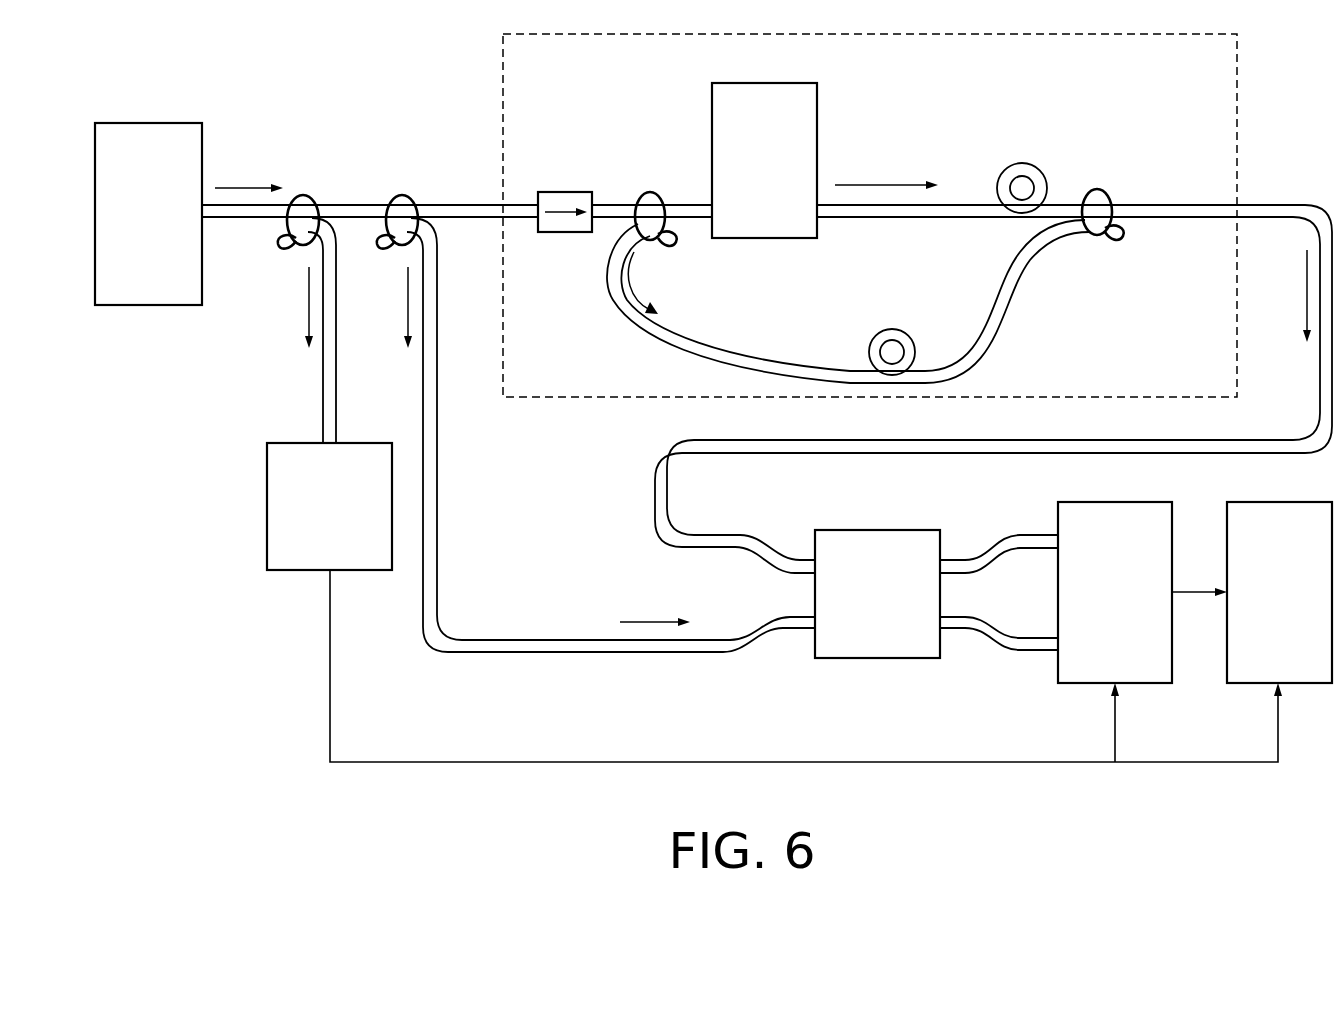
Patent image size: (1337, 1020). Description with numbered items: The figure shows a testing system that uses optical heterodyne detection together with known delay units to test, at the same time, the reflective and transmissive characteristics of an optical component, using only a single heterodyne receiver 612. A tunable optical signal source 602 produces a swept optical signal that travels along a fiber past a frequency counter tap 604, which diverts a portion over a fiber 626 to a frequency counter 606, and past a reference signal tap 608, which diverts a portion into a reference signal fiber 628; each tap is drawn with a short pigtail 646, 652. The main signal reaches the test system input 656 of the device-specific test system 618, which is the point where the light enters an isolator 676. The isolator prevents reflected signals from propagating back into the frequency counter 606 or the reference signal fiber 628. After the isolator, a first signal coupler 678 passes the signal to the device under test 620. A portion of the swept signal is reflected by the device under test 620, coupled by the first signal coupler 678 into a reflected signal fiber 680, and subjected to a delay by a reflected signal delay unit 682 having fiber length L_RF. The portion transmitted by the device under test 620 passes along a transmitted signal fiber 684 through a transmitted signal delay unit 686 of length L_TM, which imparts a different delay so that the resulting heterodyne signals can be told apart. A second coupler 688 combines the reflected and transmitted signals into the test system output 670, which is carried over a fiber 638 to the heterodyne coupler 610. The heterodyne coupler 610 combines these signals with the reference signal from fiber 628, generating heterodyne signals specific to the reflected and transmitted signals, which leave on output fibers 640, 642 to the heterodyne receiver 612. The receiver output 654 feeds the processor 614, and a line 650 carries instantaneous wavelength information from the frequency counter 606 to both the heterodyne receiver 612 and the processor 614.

The tunable optical signal source 602 is at (129, 290).
The frequency counter tap 604 is at (301, 162).
The frequency counter 606 is at (311, 552).
The reference signal tap 608 is at (401, 162).
The heterodyne coupler 610 is at (858, 642).
The heterodyne receiver 612 is at (1096, 644).
The processor 614 is at (1261, 644).
The device-specific test system 618 is at (1237, 99).
The device under test 620 is at (744, 219).
The optical fiber to frequency counter 626 is at (338, 345).
The reference signal fiber 628 is at (515, 638).
The optical fiber to heterodyne coupler 638 is at (657, 488).
The heterodyne coupler output fiber 640 is at (1017, 535).
The heterodyne coupler output fiber 642 is at (1017, 655).
The coupler fiber pigtail 646 is at (298, 250).
The instantaneous wavelength information line 650 is at (520, 767).
The coupler fiber pigtail 652 is at (398, 250).
The heterodyne receiver output 654 is at (1196, 588).
The test system input 656 is at (537, 222).
The test system output 670 is at (1238, 203).
The isolator 676 is at (566, 191).
The first signal coupler 678 is at (652, 192).
The reflected signal fiber 680 is at (653, 338).
The reflected signal delay unit 682 is at (876, 342).
The transmitted signal fiber 684 is at (923, 218).
The transmitted signal delay unit 686 is at (1026, 163).
The second coupler 688 is at (1100, 189).